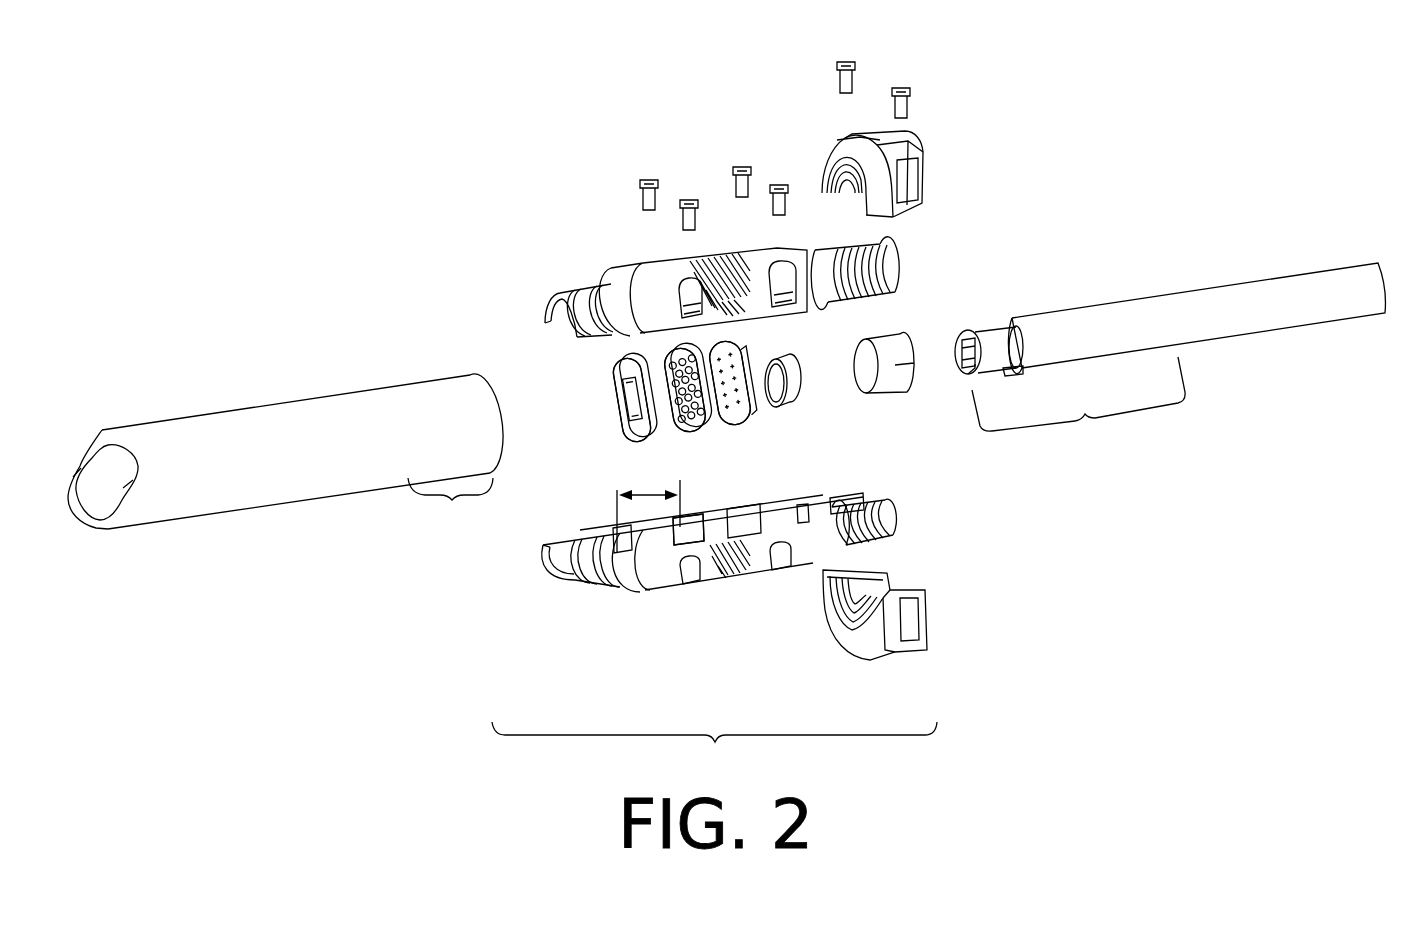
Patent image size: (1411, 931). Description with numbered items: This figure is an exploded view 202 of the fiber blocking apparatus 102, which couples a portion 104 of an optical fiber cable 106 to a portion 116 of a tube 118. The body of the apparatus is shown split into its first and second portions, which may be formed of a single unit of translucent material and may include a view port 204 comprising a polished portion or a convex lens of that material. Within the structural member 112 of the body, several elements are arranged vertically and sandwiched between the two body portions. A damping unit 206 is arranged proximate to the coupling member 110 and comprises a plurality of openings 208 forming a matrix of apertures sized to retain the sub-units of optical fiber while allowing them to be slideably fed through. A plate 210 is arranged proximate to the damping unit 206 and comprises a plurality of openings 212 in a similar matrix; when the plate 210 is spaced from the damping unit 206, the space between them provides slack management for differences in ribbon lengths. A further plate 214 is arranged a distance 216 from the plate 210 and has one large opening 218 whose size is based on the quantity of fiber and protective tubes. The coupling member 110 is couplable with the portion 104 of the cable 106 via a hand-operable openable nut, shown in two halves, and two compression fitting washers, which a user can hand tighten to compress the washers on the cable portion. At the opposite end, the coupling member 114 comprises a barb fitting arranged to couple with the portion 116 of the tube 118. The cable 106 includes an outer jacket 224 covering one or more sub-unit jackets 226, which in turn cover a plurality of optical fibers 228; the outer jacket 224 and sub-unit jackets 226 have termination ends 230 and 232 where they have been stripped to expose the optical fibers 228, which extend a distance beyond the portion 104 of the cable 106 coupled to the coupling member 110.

The fiber blocking apparatus 102 is at (488, 262).
The portion of the cable 104 is at (1078, 404).
The cable 106 is at (1183, 288).
The coupling member 110 is at (897, 280).
The structural member 112 is at (684, 516).
The coupling member 114 is at (545, 322).
The portion of the tube 116 is at (450, 502).
The tube 118 is at (347, 393).
The exploded view 202 is at (714, 747).
The view port 204 is at (700, 260).
The damping unit 206 is at (724, 430).
The plurality of openings 208 is at (704, 344).
The plate 210 is at (690, 434).
The plurality of openings 212 is at (652, 355).
The plate 214 is at (630, 442).
The distance 216 is at (640, 491).
The opening 218 is at (612, 390).
The outer jacket 224 is at (1050, 308).
The sub-unit jacket 226 is at (983, 325).
The plurality of optical fibers 228 is at (962, 340).
The termination end 230 is at (1020, 372).
The termination end 232 is at (973, 370).